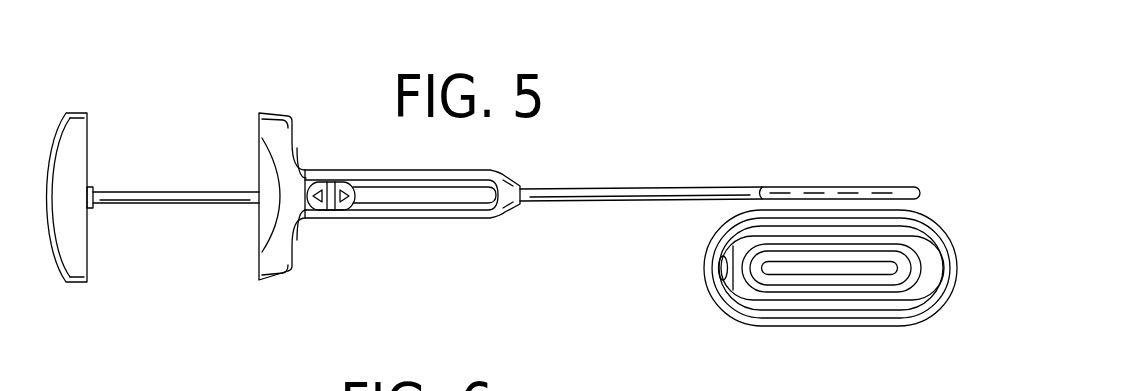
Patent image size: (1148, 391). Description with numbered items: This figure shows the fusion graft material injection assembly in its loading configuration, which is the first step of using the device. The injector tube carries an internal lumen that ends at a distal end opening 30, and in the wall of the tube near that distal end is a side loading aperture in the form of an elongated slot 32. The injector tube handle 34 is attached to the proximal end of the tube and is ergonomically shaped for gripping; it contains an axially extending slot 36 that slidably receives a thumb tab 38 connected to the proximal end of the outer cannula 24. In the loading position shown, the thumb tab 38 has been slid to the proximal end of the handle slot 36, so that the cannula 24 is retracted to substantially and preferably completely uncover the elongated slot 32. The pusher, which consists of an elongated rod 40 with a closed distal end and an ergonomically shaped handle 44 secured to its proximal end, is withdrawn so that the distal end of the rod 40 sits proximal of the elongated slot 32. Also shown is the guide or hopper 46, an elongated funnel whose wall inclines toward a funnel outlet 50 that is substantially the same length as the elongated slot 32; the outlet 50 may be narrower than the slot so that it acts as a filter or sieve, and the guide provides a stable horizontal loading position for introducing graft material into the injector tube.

In FIG. 5, the outer cannula 24 is at (597, 198).
In FIG. 5, the distal end opening 30 is at (878, 190).
In FIG. 5, the elongated slot 32 is at (807, 195).
In FIG. 5, the injector tube handle 34 is at (292, 131).
In FIG. 5, the slot 36 is at (446, 199).
In FIG. 5, the thumb tab 38 is at (336, 206).
In FIG. 5, the rod 40 is at (159, 195).
In FIG. 5, the handle 44 is at (73, 135).
In FIG. 6, the handle 44 is at (104, 373).
In FIG. 5, the hopper 46 is at (732, 298).
In FIG. 5, the funnel outlet 50 is at (817, 268).